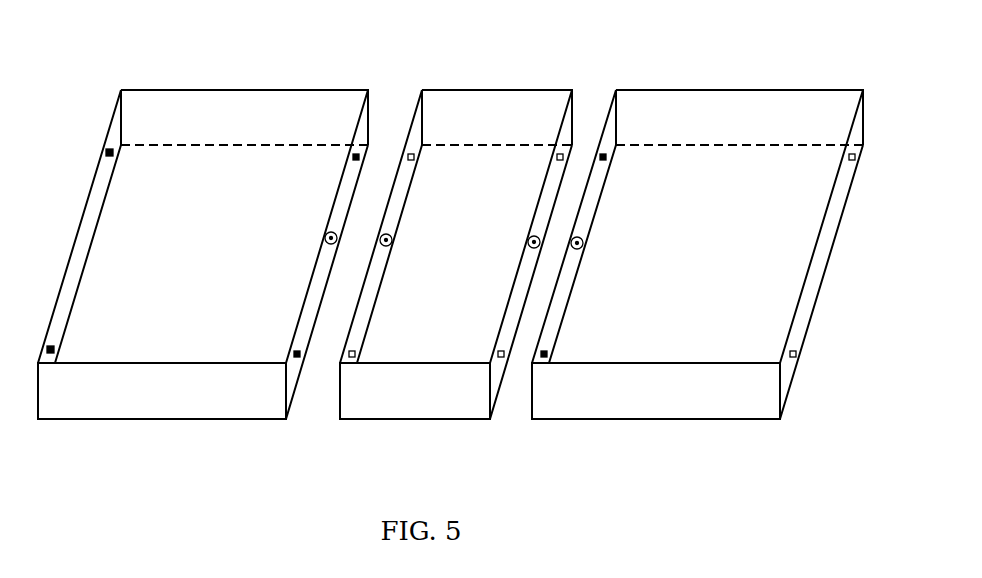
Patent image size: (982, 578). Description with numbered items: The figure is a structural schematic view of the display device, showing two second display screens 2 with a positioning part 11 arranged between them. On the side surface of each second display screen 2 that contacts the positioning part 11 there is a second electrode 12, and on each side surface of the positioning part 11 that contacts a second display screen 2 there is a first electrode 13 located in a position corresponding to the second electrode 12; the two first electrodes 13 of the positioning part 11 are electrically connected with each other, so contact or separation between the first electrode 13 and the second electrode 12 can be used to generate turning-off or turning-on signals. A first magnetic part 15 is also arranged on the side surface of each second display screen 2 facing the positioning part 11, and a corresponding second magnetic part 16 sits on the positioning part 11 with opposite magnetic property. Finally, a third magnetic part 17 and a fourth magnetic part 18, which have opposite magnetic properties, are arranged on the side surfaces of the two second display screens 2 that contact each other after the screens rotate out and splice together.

The second display screen 2 is at (208, 122).
The positioning part 11 is at (470, 128).
The second electrode 12 is at (332, 232).
The first electrode 13 is at (386, 234).
The first magnetic part 15 is at (297, 357).
The second magnetic part 16 is at (352, 357).
The third magnetic part 17 is at (50, 353).
The fourth magnetic part 18 is at (793, 357).